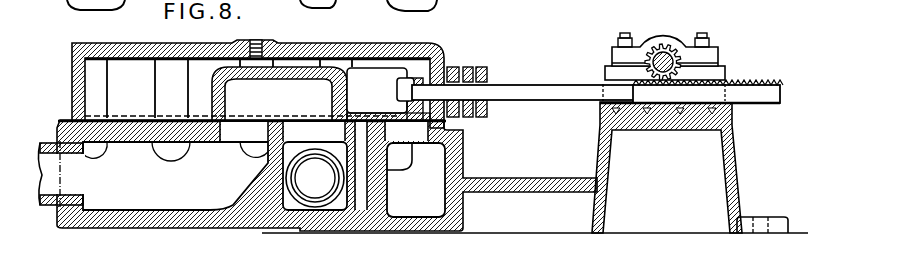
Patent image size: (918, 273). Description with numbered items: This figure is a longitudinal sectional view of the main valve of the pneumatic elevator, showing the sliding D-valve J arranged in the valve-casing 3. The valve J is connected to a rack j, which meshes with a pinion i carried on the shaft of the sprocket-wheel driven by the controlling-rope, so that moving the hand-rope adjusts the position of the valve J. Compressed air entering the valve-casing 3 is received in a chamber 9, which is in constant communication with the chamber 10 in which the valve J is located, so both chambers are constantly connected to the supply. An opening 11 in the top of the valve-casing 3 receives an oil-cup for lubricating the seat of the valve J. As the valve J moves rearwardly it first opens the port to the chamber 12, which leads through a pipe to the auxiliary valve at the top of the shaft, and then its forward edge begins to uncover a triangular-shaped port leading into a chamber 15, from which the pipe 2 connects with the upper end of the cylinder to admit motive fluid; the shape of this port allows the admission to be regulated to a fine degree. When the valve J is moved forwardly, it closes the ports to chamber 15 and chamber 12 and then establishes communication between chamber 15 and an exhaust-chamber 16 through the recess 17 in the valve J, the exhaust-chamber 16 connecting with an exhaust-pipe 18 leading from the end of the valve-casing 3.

The valve-casing 3 is at (357, 54).
The chamber 10 is at (229, 88).
The opening 11 is at (262, 47).
The recess 17 is at (279, 94).
The sliding D-valve J is at (358, 88).
The chamber 15 is at (314, 133).
The exhaust-chamber 16 is at (175, 166).
The exhaust-pipe 18 is at (67, 179).
The pipe 2 is at (304, 181).
The chamber 9 is at (415, 169).
The chamber 12 is at (361, 208).
The pinion i is at (672, 50).
The rack j is at (762, 97).